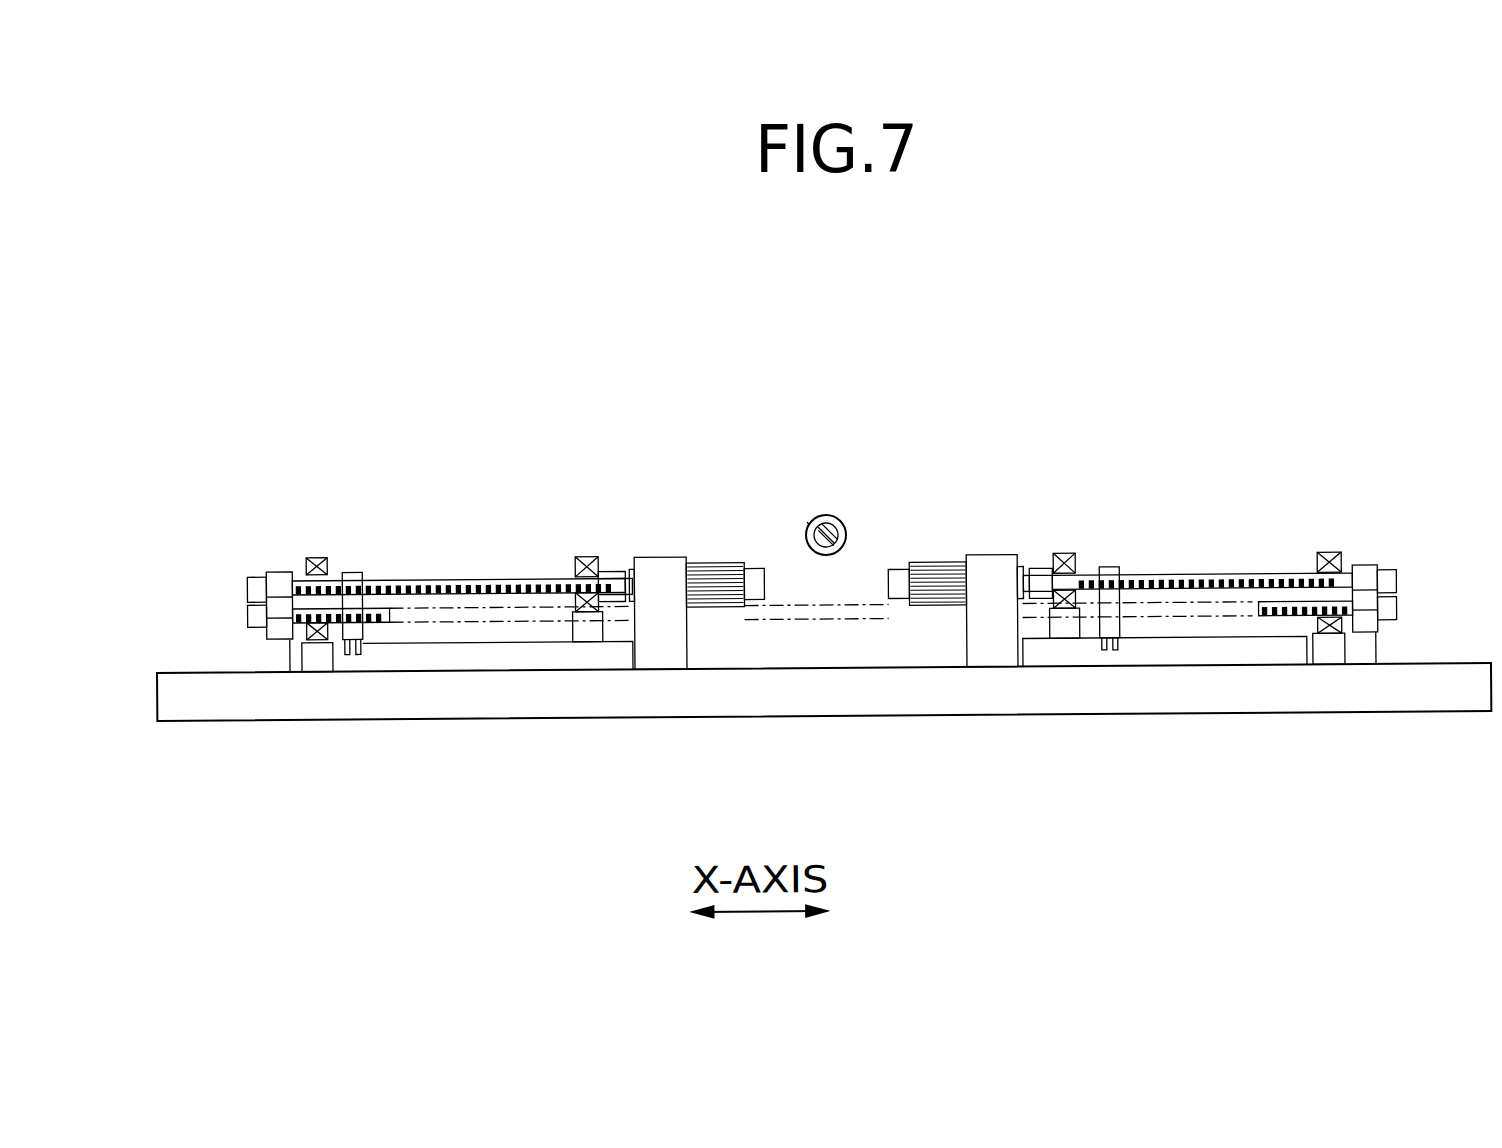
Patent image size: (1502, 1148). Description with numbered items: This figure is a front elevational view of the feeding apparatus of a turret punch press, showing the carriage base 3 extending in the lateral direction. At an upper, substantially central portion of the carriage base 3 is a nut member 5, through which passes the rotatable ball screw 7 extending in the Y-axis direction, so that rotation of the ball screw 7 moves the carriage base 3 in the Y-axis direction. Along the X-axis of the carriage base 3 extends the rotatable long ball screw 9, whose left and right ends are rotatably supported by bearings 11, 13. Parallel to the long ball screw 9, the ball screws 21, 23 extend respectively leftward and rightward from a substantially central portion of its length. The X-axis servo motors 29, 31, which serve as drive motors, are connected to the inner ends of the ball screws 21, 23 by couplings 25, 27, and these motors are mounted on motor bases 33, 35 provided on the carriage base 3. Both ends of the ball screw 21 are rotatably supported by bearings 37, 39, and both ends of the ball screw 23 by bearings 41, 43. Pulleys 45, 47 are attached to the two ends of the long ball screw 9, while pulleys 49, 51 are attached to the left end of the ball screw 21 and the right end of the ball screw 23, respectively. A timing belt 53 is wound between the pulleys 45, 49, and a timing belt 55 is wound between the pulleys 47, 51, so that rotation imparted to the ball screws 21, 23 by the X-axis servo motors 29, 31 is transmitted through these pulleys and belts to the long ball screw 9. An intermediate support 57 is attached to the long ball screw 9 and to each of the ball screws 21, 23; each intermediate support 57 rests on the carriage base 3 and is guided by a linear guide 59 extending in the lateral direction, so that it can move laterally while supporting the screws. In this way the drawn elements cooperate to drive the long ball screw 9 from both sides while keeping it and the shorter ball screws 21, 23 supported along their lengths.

The carriage base 3 is at (897, 694).
The nut member 5 is at (808, 522).
The ball screw 7 is at (829, 514).
The long ball screw 9 is at (857, 602).
The bearing 11 is at (323, 637).
The bearing 13 is at (1337, 668).
The ball screw 21 is at (482, 576).
The ball screw 23 is at (1165, 576).
The coupling 25 is at (612, 569).
The coupling 27 is at (1037, 600).
The X-axis servo motor 29 is at (718, 561).
The X-axis servo motor 31 is at (933, 562).
The motor base 33 is at (668, 658).
The motor base 35 is at (990, 658).
The bearing 37 is at (318, 553).
The bearing 39 is at (586, 554).
The bearing 41 is at (1066, 554).
The bearing 43 is at (1329, 555).
The pulley 45 is at (278, 636).
The pulley 47 is at (1372, 651).
The pulley 49 is at (275, 566).
The pulley 51 is at (1366, 568).
The timing belt 53 is at (276, 603).
The timing belt 55 is at (1398, 605).
The intermediate support 57 is at (403, 558).
The linear guide 59 is at (443, 659).